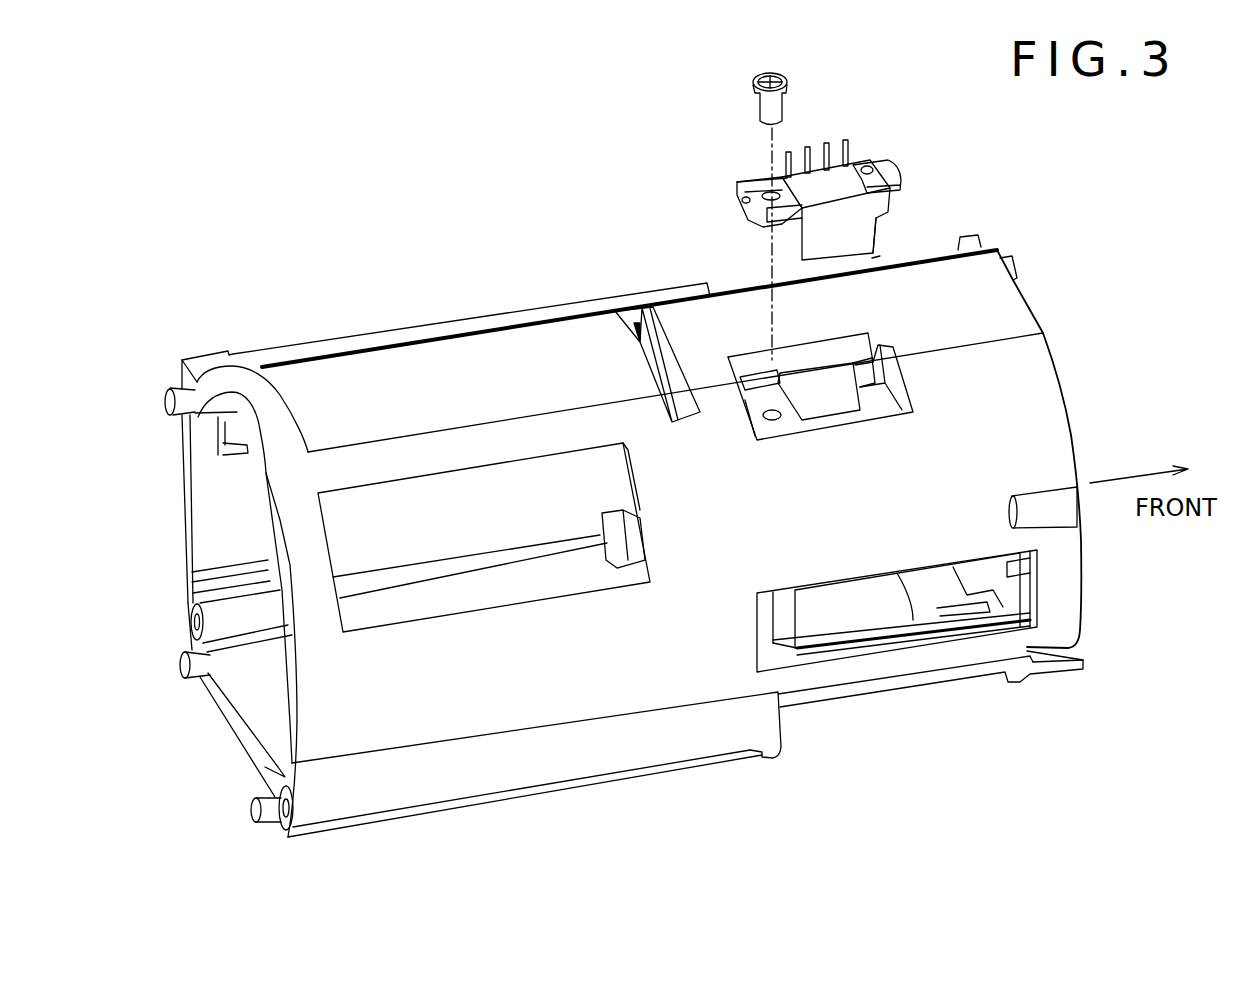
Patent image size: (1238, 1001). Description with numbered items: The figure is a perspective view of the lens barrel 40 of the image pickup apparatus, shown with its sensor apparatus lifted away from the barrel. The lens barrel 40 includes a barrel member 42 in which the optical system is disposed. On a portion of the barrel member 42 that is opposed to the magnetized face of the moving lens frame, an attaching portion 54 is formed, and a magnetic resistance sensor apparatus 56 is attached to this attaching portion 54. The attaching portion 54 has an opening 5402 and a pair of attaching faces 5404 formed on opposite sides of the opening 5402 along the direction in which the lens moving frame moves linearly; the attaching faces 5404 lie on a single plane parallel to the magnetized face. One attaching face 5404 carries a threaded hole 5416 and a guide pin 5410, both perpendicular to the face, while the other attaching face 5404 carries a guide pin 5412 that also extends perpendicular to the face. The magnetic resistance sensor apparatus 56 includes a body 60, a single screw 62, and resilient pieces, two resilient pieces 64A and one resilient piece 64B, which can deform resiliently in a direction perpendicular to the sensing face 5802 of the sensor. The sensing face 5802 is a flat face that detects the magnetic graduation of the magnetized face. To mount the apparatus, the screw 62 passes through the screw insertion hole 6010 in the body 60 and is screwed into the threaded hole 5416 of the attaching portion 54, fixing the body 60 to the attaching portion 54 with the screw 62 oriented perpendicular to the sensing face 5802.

The lens barrel 40 is at (300, 217).
The barrel member 42 is at (540, 335).
The attaching portion 54 is at (906, 402).
The opening 5402 is at (863, 417).
The attaching faces 5404 is at (892, 403).
The guide pin 5410 is at (765, 373).
The guide pin 5412 is at (873, 382).
The threaded hole 5416 is at (773, 455).
The magnetic resistance sensor apparatus 56 is at (815, 177).
The body 60 is at (867, 215).
The screw 62 is at (755, 112).
The resilient pieces 64A is at (760, 183).
The resilient piece 64B is at (903, 182).
The screw insertion hole 6010 is at (757, 192).
The sensing face 5802 is at (877, 260).